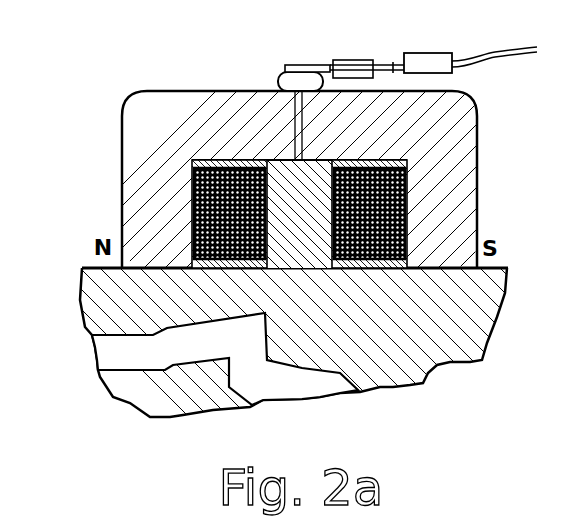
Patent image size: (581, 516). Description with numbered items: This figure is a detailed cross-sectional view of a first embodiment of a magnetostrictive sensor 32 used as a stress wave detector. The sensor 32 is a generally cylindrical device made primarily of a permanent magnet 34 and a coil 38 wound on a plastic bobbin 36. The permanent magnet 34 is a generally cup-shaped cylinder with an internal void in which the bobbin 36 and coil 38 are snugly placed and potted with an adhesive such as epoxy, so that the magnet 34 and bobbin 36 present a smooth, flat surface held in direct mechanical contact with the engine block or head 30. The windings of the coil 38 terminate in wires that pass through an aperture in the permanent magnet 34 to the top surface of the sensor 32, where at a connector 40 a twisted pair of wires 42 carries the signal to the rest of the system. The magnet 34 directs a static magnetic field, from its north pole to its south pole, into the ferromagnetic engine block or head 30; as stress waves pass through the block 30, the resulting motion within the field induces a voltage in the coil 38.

The engine block or head 30 is at (424, 380).
The sensor 32 is at (130, 78).
The permanent magnet 34 is at (467, 177).
The plastic bobbin 36 is at (285, 165).
The coil 38 is at (192, 207).
The connector 40 is at (302, 63).
The twisted pair of wires 42 is at (505, 50).